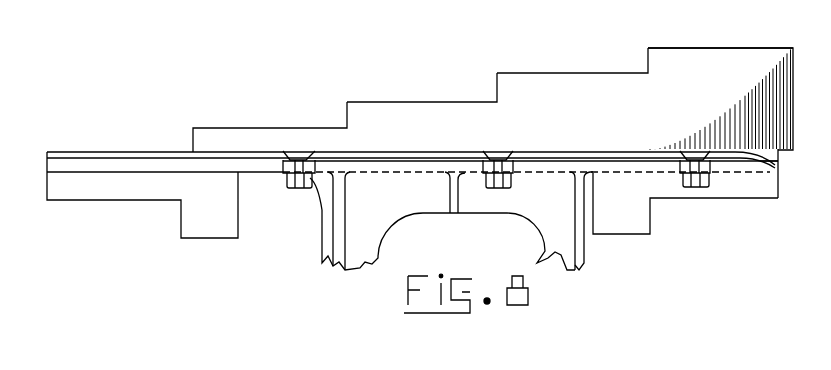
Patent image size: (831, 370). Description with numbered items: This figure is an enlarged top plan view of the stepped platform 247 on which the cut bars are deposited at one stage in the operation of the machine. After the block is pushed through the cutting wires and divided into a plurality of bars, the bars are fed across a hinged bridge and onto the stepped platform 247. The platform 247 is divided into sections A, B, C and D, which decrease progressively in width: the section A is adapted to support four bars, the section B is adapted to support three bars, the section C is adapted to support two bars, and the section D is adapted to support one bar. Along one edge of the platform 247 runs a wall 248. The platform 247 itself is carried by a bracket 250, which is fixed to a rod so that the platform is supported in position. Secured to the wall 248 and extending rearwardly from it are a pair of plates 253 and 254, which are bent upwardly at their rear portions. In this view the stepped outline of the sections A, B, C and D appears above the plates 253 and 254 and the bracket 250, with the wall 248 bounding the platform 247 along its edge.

The stepped platform 247 is at (745, 50).
The wall 248 is at (780, 165).
The bracket 250 is at (421, 213).
The plate 253 is at (148, 199).
The plate 254 is at (770, 199).
The section A is at (695, 50).
The section B is at (582, 76).
The section C is at (425, 103).
The section D is at (293, 128).